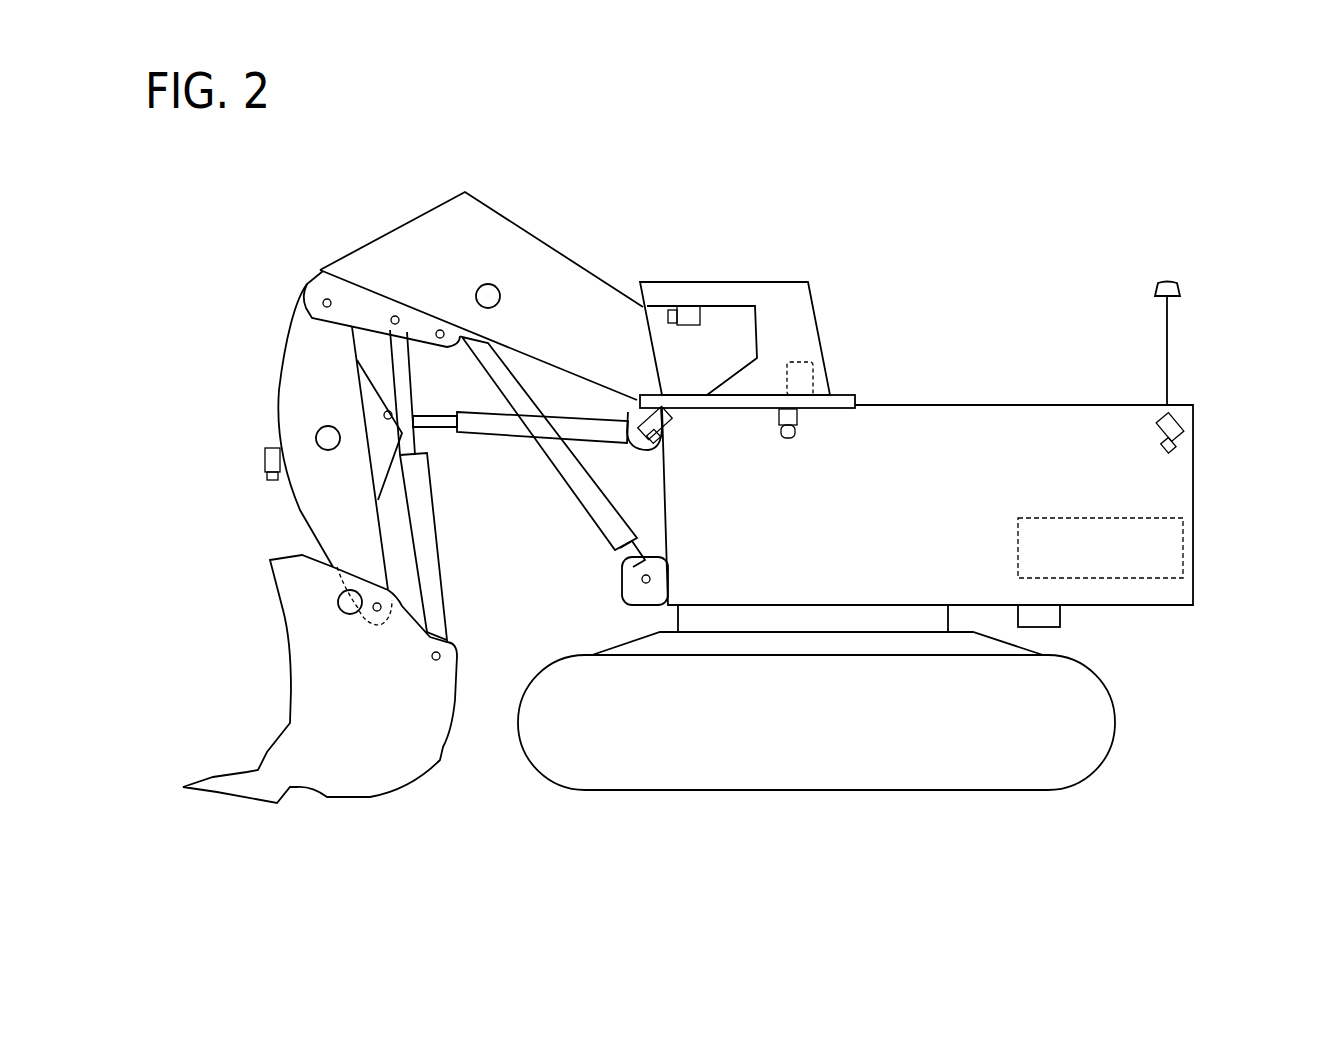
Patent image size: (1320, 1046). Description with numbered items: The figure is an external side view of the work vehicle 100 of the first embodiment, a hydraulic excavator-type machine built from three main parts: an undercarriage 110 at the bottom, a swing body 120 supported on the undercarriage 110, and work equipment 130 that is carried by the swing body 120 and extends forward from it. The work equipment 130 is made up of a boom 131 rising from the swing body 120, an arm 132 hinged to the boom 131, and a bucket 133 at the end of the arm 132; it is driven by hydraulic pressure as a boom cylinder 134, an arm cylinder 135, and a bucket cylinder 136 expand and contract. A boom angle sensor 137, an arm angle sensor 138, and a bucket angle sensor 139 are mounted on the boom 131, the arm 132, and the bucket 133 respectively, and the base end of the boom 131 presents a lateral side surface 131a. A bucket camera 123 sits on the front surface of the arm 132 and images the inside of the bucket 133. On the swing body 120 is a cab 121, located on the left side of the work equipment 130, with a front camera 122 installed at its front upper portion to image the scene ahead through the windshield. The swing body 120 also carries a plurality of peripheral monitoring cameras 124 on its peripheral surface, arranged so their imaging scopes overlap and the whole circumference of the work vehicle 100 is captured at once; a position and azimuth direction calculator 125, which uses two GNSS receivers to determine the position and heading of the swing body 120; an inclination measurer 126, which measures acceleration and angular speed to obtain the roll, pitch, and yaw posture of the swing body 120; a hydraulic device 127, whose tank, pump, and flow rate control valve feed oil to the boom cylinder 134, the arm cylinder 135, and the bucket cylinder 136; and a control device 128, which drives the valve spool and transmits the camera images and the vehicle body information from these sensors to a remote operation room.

The work vehicle 100 is at (1047, 200).
The undercarriage 110 is at (810, 792).
The swing body 120 is at (1058, 404).
The cab 121 is at (757, 282).
The front camera 122 is at (687, 306).
The bucket camera 123 is at (265, 460).
The peripheral monitoring cameras 124 is at (797, 428).
The position and azimuth direction calculator 125 is at (1170, 280).
The inclination measurer 126 is at (1062, 613).
The hydraulic device 127 is at (1187, 547).
The control device 128 is at (800, 362).
The work equipment 130 is at (608, 240).
The boom 131 is at (490, 205).
The lateral side surface 131a is at (465, 266).
The arm 132 is at (281, 376).
The bucket 133 is at (363, 800).
The boom cylinder 134 is at (582, 525).
The arm cylinder 135 is at (478, 435).
The bucket cylinder 136 is at (435, 550).
The boom angle sensor 137 is at (495, 285).
The arm angle sensor 138 is at (316, 438).
The bucket angle sensor 139 is at (338, 601).